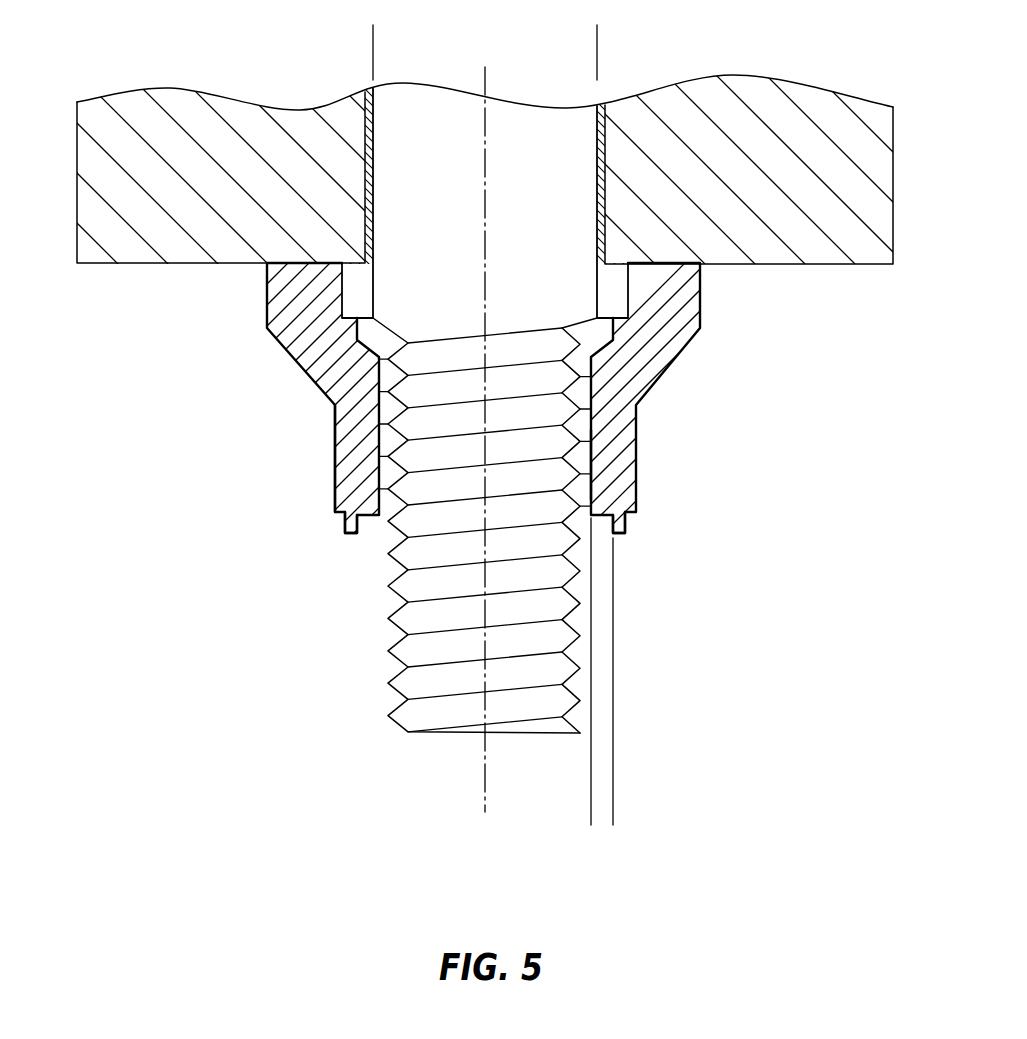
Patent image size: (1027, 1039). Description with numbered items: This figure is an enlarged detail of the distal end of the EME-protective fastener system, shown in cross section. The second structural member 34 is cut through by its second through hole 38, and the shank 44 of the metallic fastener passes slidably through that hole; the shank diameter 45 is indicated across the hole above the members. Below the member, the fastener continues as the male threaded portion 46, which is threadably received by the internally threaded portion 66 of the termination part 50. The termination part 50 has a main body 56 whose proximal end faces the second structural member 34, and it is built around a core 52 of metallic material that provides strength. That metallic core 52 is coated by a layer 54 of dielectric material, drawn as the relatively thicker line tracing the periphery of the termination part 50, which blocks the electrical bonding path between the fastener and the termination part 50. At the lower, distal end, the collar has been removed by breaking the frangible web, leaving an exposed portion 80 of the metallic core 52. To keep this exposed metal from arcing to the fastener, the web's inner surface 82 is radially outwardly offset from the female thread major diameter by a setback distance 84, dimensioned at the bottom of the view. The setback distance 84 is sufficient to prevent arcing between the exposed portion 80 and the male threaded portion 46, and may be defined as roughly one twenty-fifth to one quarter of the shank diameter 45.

The second structural member 34 is at (842, 190).
The second through hole 38 is at (363, 148).
The shank 44 is at (393, 224).
The shank diameter 45 is at (374, 52).
The male threaded portion 46 is at (388, 652).
The termination part 50 is at (652, 414).
The core 52 is at (353, 450).
The layer of dielectric material 54 is at (637, 443).
The main body 56 is at (327, 413).
The internally threaded portion 66 is at (583, 455).
The exposed portion 80 is at (614, 535).
The inner surface 82 is at (367, 521).
The setback distance 84 is at (558, 798).